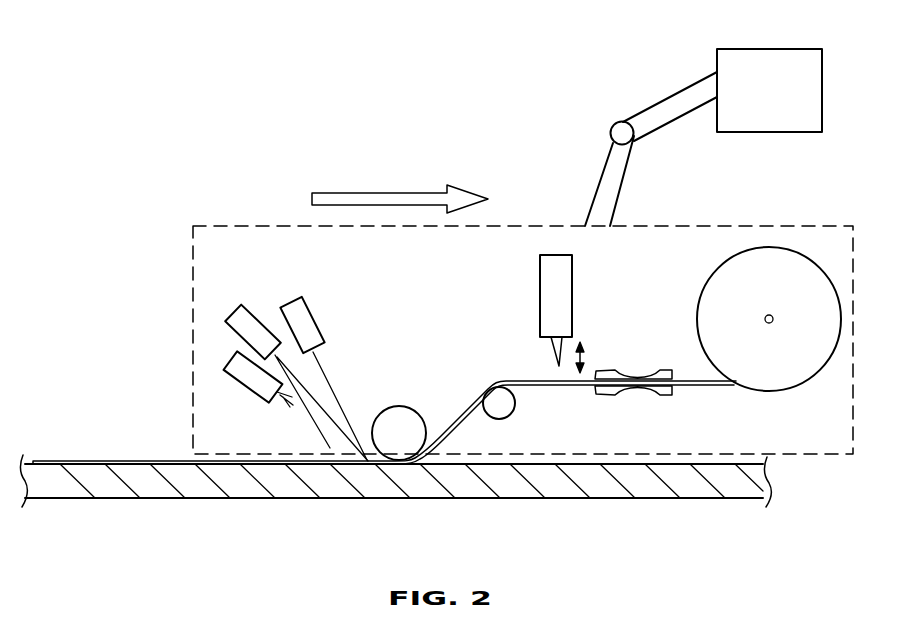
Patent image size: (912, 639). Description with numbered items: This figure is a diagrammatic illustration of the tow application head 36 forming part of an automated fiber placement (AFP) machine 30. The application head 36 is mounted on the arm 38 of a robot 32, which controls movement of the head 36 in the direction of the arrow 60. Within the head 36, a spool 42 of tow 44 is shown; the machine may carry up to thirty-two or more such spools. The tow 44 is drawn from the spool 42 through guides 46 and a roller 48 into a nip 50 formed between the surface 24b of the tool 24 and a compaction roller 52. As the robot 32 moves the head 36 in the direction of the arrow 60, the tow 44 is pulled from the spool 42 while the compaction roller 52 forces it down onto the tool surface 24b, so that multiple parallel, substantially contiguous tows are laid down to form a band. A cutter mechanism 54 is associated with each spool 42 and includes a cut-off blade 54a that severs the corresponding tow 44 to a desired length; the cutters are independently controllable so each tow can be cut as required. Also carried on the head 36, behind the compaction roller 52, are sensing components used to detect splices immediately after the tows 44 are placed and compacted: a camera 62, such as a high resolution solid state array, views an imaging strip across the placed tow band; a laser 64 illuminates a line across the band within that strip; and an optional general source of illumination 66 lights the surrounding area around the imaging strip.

The tool 24 is at (685, 483).
The tool surface 24b is at (494, 459).
The AFP machine 30 is at (450, 148).
The robot 32 is at (769, 49).
The tow application head 36 is at (257, 225).
The robot arm 38 is at (612, 167).
The spool 42 is at (760, 265).
The tow 44 is at (718, 388).
The guides 46 is at (600, 371).
The rollers 48 is at (500, 403).
The nip 50 is at (432, 457).
The compaction roller 52 is at (399, 427).
The cutter mechanism 54 is at (556, 268).
The cut-off blade 54a is at (555, 347).
The arrow 60 is at (362, 198).
The camera 62 is at (243, 320).
The laser 64 is at (295, 313).
The source of illumination 66 is at (238, 363).